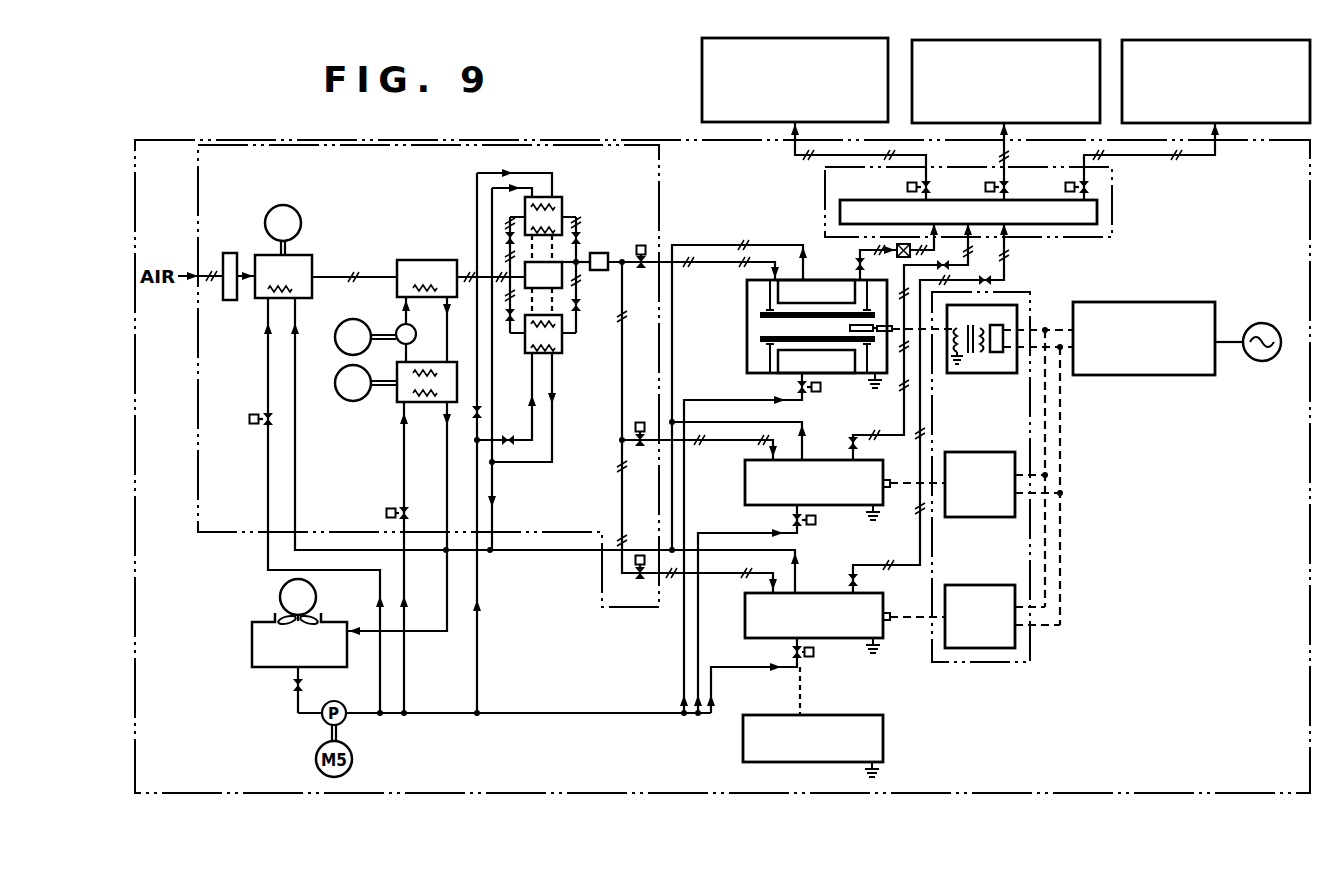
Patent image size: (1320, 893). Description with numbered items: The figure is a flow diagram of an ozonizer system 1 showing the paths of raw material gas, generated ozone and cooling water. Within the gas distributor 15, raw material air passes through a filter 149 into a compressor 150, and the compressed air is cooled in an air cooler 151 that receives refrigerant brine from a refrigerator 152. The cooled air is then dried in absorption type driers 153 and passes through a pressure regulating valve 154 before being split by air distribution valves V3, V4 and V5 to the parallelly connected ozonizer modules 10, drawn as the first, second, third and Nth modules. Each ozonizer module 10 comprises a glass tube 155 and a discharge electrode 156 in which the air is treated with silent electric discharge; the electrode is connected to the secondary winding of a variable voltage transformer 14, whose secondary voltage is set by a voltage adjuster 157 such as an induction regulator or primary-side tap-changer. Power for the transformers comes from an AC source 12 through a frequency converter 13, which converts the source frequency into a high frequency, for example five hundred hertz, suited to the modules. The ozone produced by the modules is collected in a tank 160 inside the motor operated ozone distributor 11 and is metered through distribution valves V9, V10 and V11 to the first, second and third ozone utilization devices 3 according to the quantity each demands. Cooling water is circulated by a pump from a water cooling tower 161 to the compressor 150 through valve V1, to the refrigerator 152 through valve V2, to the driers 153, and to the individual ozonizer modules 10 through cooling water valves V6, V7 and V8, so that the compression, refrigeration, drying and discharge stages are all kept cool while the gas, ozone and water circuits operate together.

The ozonizer system 1 is at (634, 140).
The ozone utilization device 3 is at (702, 75).
The ozonizer module 10 is at (747, 289).
The ozone distributor 11 is at (1057, 202).
The AC source 12 is at (1263, 361).
The frequency converter 13 is at (1143, 377).
The transformer 14 is at (955, 373).
The gas distributor 15 is at (660, 192).
The filter 149 is at (232, 300).
The compressor 150 is at (262, 255).
The air cooler 151 is at (400, 260).
The refrigerator 152 is at (393, 398).
The drier 153 is at (562, 199).
The pressure regulating valve 154 is at (598, 253).
The glass tube 155 is at (760, 319).
The discharge electrode 156 is at (851, 323).
The voltage adjuster 157 is at (998, 352).
The tank 160 is at (1085, 225).
The water cooling tower 161 is at (252, 660).
The cooling water valve V1 is at (256, 424).
The cooling water valve V2 is at (409, 513).
The air distribution valve V3 is at (641, 269).
The air distribution valve V4 is at (641, 448).
The air distribution valve V5 is at (641, 580).
The ozonizer module cooling water valve V6 is at (822, 392).
The ozonizer module cooling water valve V7 is at (816, 525).
The ozonizer module cooling water valve V8 is at (814, 652).
The distribution valve V9 is at (907, 187).
The distribution valve V10 is at (985, 187).
The distribution valve V11 is at (1065, 187).